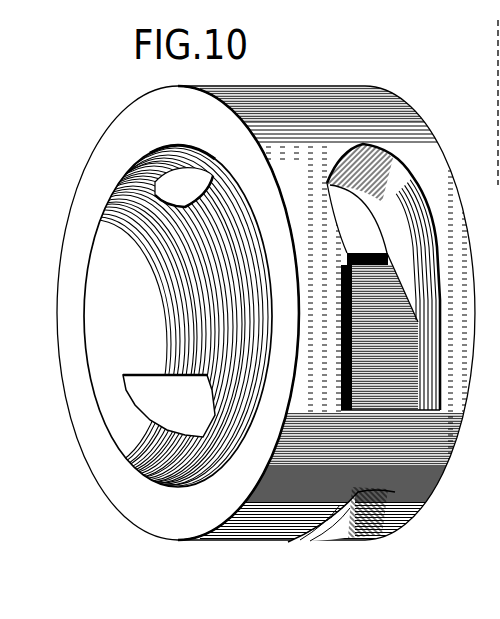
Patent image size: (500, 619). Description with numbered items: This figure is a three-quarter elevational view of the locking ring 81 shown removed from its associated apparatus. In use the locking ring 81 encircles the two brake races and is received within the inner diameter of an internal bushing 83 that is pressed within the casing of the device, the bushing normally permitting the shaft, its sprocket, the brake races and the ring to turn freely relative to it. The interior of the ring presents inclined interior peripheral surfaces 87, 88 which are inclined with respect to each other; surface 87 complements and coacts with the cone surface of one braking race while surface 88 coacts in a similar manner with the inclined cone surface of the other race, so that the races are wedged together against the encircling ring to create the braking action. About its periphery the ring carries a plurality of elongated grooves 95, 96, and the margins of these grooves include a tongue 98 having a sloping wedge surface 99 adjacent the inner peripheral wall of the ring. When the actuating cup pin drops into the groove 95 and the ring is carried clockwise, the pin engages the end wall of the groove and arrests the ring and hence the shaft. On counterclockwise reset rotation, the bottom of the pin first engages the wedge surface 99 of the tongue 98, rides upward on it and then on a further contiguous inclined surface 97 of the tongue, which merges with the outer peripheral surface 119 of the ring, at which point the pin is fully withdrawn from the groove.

The locking ring 81 is at (414, 108).
The internal bushing 83 is at (499, 43).
The inclined interior peripheral surface 87 is at (104, 231).
The inclined interior peripheral surface 88 is at (219, 303).
The groove 95 is at (397, 203).
The groove 96 is at (363, 517).
The inclined surface of tongue 97 is at (180, 173).
The tongue 98 is at (395, 378).
The sloping wedge surface 99 is at (374, 253).
The outer peripheral surface 119 is at (357, 100).